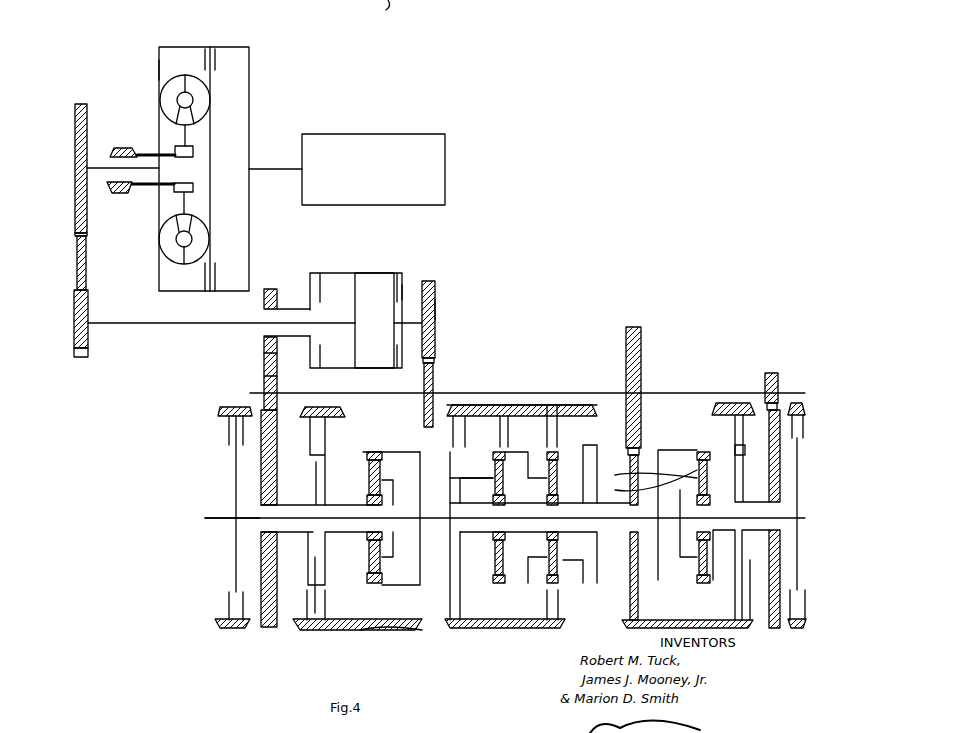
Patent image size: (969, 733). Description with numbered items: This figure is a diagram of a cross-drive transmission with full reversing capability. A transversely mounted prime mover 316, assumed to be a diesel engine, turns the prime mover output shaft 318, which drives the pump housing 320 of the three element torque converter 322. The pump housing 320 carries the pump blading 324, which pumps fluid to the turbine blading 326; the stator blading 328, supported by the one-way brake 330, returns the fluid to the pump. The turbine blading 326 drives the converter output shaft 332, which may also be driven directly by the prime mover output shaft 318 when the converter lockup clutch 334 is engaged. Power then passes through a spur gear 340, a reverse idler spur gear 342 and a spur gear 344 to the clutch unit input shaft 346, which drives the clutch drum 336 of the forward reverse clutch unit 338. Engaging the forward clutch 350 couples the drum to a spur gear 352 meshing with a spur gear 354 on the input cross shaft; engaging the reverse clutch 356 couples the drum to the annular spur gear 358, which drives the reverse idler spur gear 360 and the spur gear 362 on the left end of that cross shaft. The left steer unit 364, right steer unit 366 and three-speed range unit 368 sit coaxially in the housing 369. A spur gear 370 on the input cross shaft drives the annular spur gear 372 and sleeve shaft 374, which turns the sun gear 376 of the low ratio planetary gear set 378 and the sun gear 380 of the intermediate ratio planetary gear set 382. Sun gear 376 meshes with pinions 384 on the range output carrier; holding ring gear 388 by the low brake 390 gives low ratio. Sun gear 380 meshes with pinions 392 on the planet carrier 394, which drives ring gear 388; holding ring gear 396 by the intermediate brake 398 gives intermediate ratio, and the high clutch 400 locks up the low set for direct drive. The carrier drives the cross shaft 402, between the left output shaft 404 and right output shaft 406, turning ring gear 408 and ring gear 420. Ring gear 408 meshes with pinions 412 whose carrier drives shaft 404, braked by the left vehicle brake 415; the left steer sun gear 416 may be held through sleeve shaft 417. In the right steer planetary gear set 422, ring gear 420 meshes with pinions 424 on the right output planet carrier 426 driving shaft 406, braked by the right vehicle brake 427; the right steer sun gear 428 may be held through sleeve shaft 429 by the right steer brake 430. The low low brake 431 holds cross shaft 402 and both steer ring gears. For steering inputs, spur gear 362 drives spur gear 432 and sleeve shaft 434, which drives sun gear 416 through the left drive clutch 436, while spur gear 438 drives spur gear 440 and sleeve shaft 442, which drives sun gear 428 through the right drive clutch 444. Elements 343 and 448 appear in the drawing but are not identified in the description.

The prime mover 316 is at (428, 134).
The prime mover output shaft 318 is at (270, 169).
The pump housing 320 is at (168, 47).
The torque converter 322 is at (149, 61).
The pump blading 324 is at (163, 110).
The turbine blading 326 is at (205, 105).
The stator blading 328 is at (193, 152).
The one-way brake 330 is at (175, 150).
The converter output shaft 332 is at (102, 168).
The converter lockup clutch 334 is at (218, 60).
The clutch drum 336 is at (375, 273).
The forward reverse clutch unit 338 is at (411, 276).
The spur gear 340 is at (75, 130).
The reverse idler spur gear 342 is at (77, 253).
The gear 343 is at (525, 405).
The spur gear 344 is at (74, 322).
The clutch unit input shaft 346 is at (130, 323).
The forward clutch 350 is at (435, 286).
The spur gear 352 is at (436, 302).
The spur gear 354 is at (434, 378).
The reverse clutch 356 is at (312, 273).
The annular spur gear 358 is at (264, 299).
The reverse idler spur gear 360 is at (264, 346).
The spur gear 362 is at (238, 407).
The left steer unit 364 is at (410, 640).
The right steer unit 366 is at (616, 631).
The three-speed range unit 368 is at (494, 636).
The housing 369 is at (302, 630).
The spur gear 370 is at (641, 340).
The annular spur gear 372 is at (638, 470).
The sleeve shaft 374 is at (628, 520).
The sun gear 376 is at (460, 503).
The low ratio planetary gear set 378 is at (490, 491).
The sun gear 380 is at (553, 520).
The intermediate ratio planetary gear set 382 is at (566, 487).
The pinions 384 is at (495, 470).
The ring gear 388 is at (505, 454).
The low brake 390 is at (495, 405).
The pinions 392 is at (558, 455).
The planet carrier 394 is at (495, 485).
The ring gear 396 is at (568, 410).
The intermediate brake 398 is at (555, 405).
The high clutch 400 is at (597, 445).
The cross shaft 402 is at (448, 520).
The left output shaft 404 is at (210, 520).
The right output shaft 406 is at (761, 579).
The ring gear 408 is at (380, 452).
The pinions 412 is at (382, 470).
The left vehicle brake 415 is at (229, 432).
The left steer sun gear 416 is at (372, 532).
The sleeve shaft 417 is at (325, 530).
The ring gear 420 is at (700, 452).
The right steer planetary gear set 422 is at (714, 472).
The pinions 424 is at (642, 484).
The right output planet carrier 426 is at (642, 474).
The right vehicle brake 427 is at (805, 405).
The right steer sun gear 428 is at (697, 545).
The sleeve shaft 429 is at (724, 575).
The right steer brake 430 is at (740, 403).
The low low brake 431 is at (421, 452).
The spur gear 432 is at (261, 458).
The sleeve shaft 434 is at (316, 490).
The left drive clutch 436 is at (310, 440).
The spur gear 438 is at (765, 378).
The spur gear 440 is at (364, 486).
The sleeve shaft 442 is at (750, 500).
The right drive clutch 444 is at (395, 480).
The gear 448 is at (315, 407).